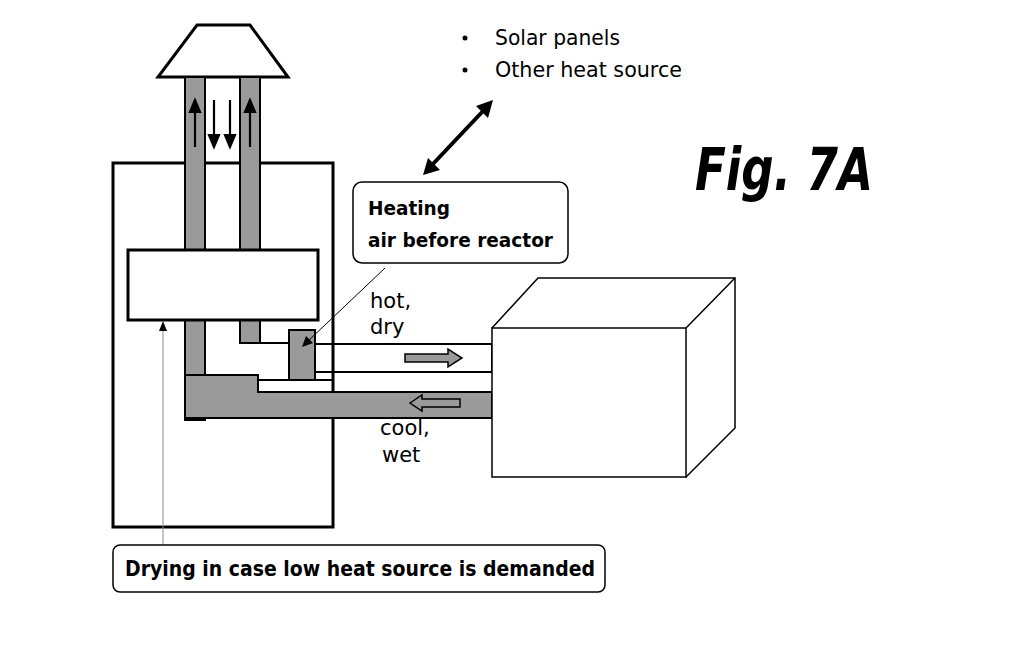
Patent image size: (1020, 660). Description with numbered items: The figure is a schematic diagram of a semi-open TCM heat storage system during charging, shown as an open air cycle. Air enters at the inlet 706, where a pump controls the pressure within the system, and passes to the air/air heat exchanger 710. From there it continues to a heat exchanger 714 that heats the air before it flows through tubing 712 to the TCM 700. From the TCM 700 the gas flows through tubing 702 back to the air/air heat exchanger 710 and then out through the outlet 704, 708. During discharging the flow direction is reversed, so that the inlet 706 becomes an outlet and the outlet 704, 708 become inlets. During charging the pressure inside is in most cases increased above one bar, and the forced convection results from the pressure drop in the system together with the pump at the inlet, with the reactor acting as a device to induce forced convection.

The TCM 700 is at (643, 366).
The tubing 702 is at (425, 418).
The outlet 704 is at (185, 140).
The inlet 706 is at (270, 48).
The outlet 708 is at (262, 140).
The air/air heat exchanger 710 is at (128, 289).
The tubing 712 is at (460, 344).
The heat exchanger 714 is at (300, 380).